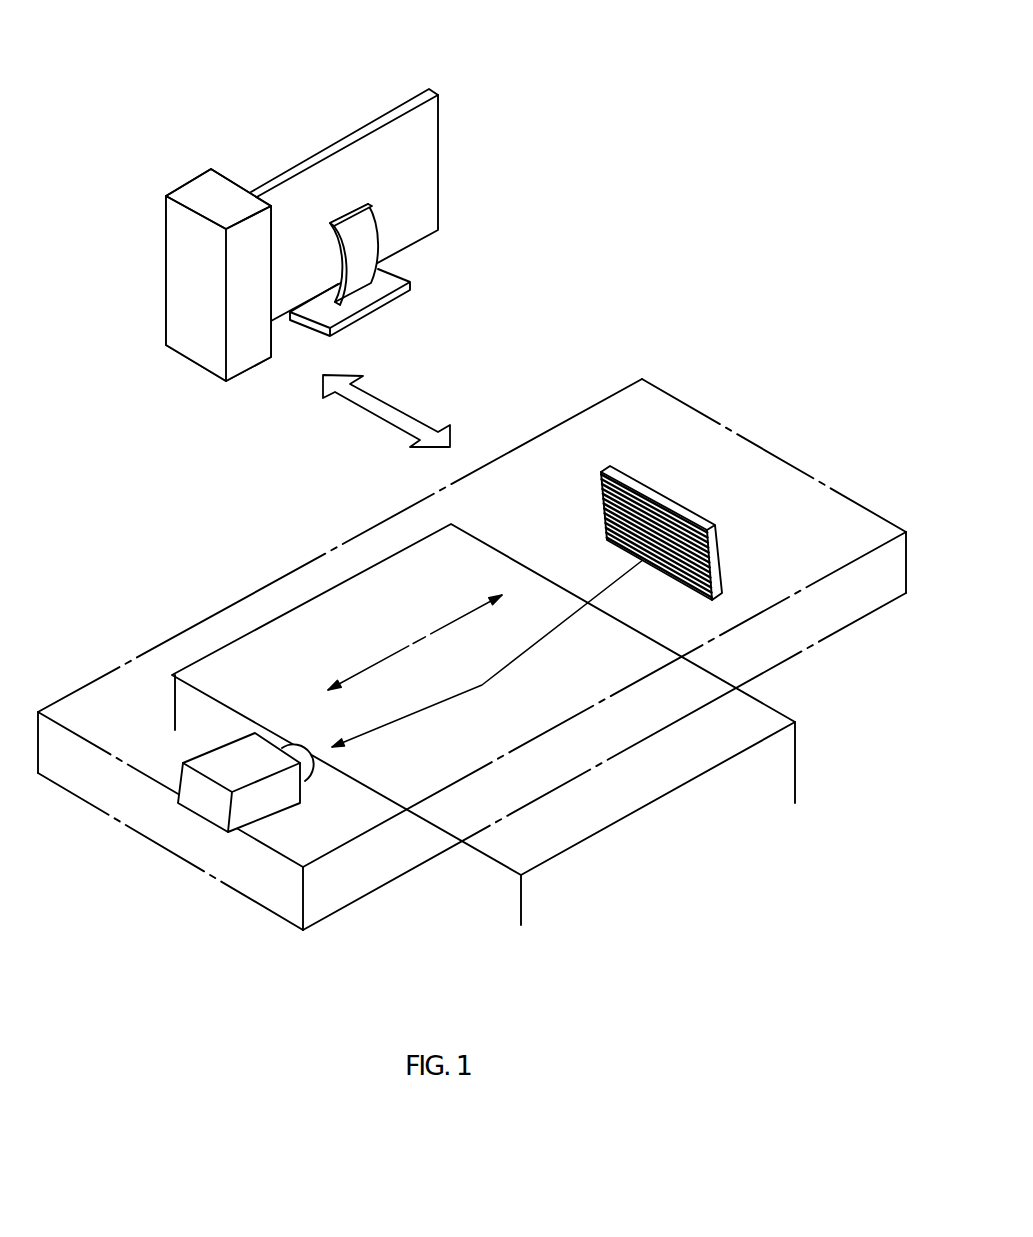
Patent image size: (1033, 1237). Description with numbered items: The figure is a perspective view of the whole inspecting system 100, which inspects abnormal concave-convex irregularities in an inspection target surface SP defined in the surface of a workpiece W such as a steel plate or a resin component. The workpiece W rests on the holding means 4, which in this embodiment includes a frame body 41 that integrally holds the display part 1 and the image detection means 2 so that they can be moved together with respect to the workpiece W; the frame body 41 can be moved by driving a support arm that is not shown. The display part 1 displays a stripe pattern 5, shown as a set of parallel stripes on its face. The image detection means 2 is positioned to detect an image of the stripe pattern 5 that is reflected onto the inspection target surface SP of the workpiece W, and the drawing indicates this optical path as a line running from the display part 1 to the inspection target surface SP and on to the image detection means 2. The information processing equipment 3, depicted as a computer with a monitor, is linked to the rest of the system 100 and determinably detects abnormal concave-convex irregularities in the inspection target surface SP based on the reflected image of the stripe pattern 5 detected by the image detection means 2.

The inspecting system 100 is at (660, 152).
The information processing equipment 3 is at (447, 262).
The holding means 4 is at (667, 384).
The frame body 41 is at (798, 465).
The display part 1 is at (725, 534).
The stripe pattern 5 is at (605, 518).
The image detection means 2 is at (180, 772).
The inspection target surface SP is at (742, 722).
The workpiece W is at (493, 905).